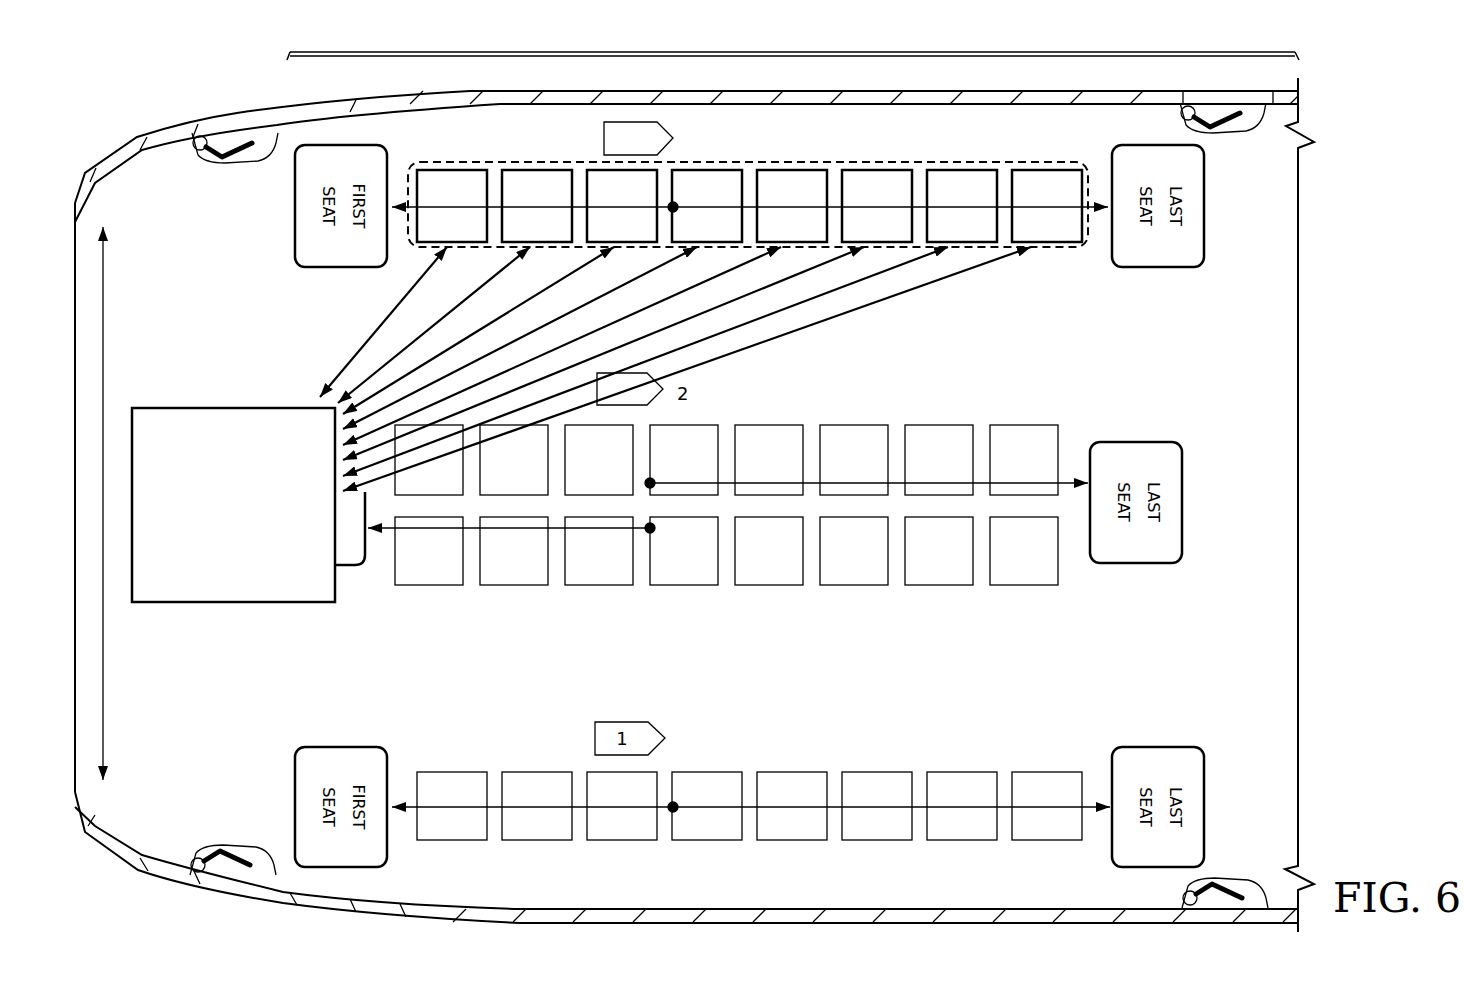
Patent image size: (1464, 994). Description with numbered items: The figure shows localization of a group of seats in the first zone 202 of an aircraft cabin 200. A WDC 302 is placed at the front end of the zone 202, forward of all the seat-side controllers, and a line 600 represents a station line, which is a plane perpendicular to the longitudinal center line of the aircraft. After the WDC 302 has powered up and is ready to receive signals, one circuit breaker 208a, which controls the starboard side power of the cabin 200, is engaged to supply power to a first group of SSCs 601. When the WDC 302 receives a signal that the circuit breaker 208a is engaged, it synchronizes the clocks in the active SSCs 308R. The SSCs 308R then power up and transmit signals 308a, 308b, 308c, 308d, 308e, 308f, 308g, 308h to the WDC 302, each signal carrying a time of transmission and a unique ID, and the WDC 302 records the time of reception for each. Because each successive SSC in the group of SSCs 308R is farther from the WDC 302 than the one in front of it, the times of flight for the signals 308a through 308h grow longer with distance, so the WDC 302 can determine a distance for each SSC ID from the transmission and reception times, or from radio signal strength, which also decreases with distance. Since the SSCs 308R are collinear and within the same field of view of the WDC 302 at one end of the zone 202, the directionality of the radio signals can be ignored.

The cabin 200 is at (1366, 242).
The zone 202 is at (800, 57).
The line representing a station line 600 is at (106, 692).
The WDC 302 is at (254, 536).
The circuit breaker 208a is at (603, 132).
The SSCs 308R is at (792, 168).
The first group of SSCs 601 is at (1062, 254).
The signal 308a is at (387, 318).
The signal 308b is at (405, 349).
The signal 308c is at (415, 370).
The signal 308d is at (712, 275).
The signal 308e is at (757, 307).
The signal 308f is at (815, 287).
The signal 308g is at (873, 270).
The signal 308h is at (953, 277).